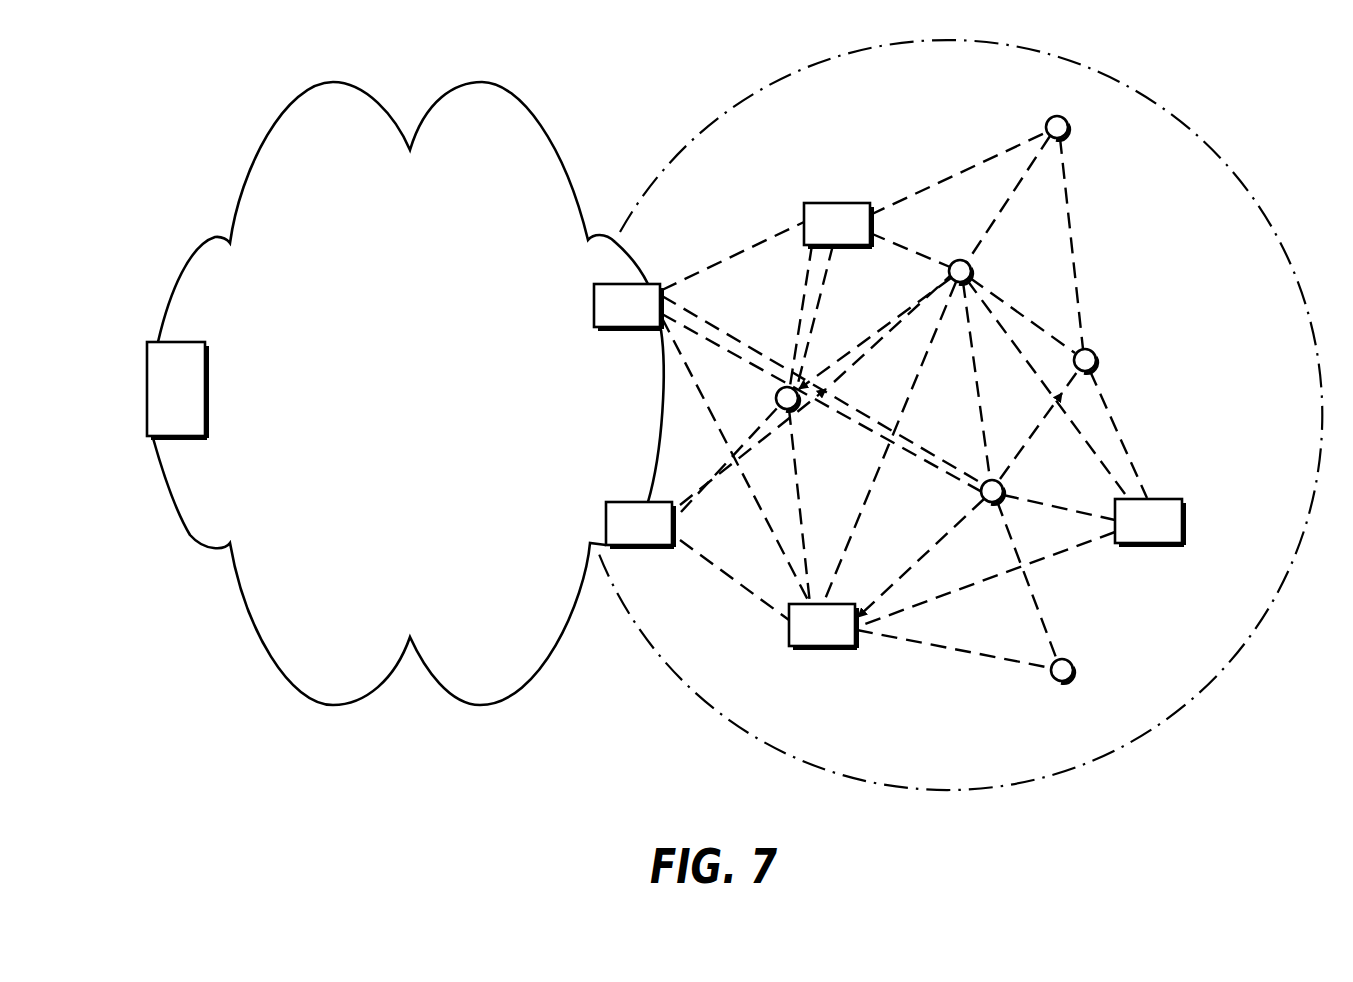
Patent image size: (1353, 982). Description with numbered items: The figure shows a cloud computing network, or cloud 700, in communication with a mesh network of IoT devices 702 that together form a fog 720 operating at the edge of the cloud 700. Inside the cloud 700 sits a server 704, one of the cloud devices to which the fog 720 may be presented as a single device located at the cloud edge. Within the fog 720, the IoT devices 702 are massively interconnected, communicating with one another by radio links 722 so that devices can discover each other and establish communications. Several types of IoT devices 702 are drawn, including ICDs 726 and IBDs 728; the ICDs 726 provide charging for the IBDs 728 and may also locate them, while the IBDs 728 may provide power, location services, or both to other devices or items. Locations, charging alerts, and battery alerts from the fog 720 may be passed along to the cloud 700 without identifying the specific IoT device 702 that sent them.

The cloud 700 is at (497, 705).
The IoT device 702 is at (608, 284).
The server 704 is at (190, 341).
The fog 720 is at (1140, 735).
The radio link 722 is at (790, 287).
The ICD 726 is at (821, 201).
The IBD 728 is at (798, 386).